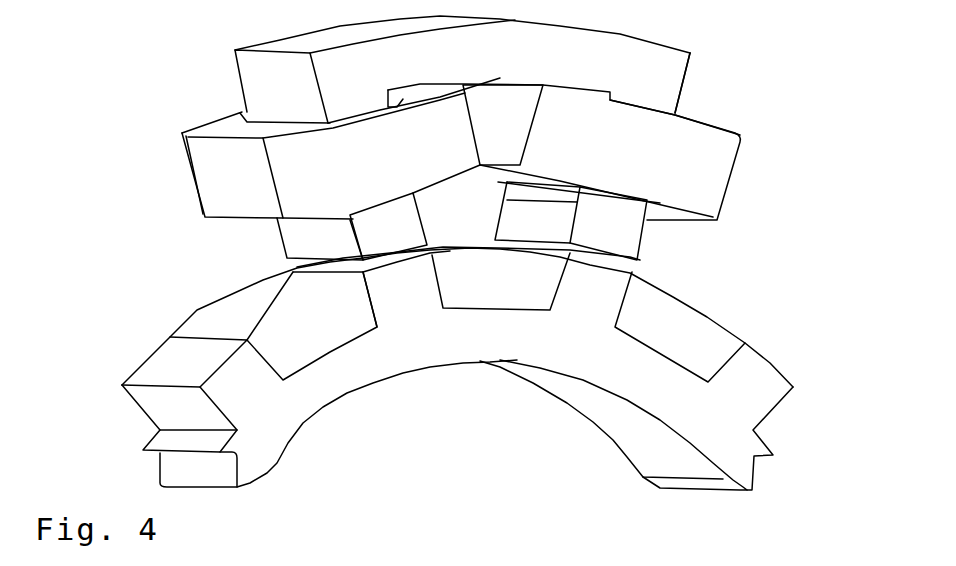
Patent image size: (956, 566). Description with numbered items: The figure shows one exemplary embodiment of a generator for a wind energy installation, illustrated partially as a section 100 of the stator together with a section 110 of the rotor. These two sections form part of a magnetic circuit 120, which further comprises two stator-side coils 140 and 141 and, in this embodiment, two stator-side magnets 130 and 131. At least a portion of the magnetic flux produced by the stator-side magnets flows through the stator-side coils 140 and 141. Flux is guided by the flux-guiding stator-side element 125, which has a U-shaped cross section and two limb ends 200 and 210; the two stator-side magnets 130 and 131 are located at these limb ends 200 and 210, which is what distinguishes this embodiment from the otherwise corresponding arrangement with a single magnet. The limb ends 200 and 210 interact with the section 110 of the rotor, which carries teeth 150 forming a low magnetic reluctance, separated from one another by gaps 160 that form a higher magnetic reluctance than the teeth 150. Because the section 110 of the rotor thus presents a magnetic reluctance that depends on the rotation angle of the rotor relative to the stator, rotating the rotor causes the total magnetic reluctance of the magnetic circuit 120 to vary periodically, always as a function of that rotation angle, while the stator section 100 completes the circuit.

The section of a stator 100 is at (722, 81).
The section of a rotor 110 is at (457, 368).
The magnetic circuit 120 is at (505, 75).
The flux-guiding stator-side element 125 is at (349, 92).
The stator-side magnet 130 is at (267, 239).
The stator-side magnet 131 is at (632, 219).
The stator-side coil 140 is at (327, 139).
The stator-side coil 141 is at (615, 149).
The teeth 150 is at (179, 371).
The gaps 160 is at (261, 323).
The limb end 200 is at (299, 234).
The limb end 210 is at (670, 242).